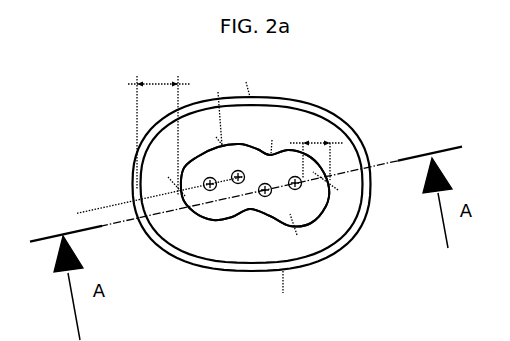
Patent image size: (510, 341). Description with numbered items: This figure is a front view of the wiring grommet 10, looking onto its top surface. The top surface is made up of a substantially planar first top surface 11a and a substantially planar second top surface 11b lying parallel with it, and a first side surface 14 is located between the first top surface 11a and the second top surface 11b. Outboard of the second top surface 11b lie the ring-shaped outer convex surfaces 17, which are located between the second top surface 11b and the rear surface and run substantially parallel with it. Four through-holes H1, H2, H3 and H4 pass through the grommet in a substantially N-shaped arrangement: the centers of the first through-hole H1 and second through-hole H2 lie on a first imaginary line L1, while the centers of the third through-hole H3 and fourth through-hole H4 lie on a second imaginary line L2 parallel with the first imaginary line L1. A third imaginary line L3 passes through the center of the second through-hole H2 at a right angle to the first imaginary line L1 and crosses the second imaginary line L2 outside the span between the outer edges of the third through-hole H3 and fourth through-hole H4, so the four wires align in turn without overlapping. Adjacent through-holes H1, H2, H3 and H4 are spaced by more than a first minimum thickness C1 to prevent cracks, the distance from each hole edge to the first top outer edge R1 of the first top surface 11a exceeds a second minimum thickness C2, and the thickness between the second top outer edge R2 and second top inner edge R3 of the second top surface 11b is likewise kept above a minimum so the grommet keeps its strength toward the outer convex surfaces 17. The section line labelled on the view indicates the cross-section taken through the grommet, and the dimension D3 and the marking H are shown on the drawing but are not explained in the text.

The wiring grommet 10 is at (361, 82).
The outer convex surface 17 is at (358, 130).
The first top surface 11a is at (262, 148).
The second top surface 11b is at (284, 106).
The first side surface 14 is at (255, 173).
The first through-hole H1 is at (208, 192).
The second through-hole H2 is at (237, 185).
The third through-hole H3 is at (265, 198).
The fourth through-hole H4 is at (300, 189).
The first imaginary line L1 is at (100, 226).
The second imaginary line L2 is at (123, 221).
The third imaginary line L3 is at (218, 92).
The wall distance D3 is at (159, 134).
The second minimum thickness C2 is at (316, 155).
The first minimum thickness C1 is at (256, 185).
The first top outer edge R1 is at (333, 184).
The second top outer edge R2 is at (246, 84).
The second top inner edge R3 is at (171, 181).
The housing H is at (285, 291).